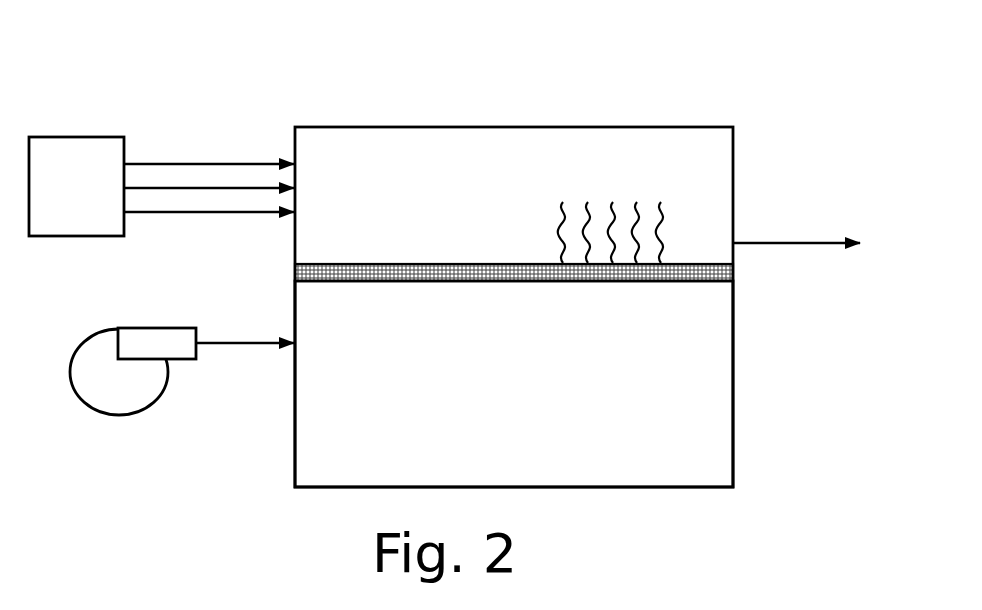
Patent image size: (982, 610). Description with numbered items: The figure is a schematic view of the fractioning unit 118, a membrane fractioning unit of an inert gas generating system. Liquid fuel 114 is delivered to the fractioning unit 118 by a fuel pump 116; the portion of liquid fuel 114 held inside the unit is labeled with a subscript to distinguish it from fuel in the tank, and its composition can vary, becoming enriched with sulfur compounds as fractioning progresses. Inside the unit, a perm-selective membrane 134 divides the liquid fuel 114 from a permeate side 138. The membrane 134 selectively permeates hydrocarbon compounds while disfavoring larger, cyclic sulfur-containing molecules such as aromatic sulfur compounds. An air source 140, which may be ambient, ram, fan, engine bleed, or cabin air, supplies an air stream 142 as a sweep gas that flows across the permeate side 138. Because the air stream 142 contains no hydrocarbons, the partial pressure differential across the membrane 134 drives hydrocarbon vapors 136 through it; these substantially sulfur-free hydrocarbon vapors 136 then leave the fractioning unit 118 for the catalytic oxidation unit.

The liquid fuel 114 is at (507, 400).
The fuel pump 116 is at (82, 333).
The fractioning unit 118 is at (678, 124).
The membrane 134 is at (450, 259).
The hydrocarbon vapors 136 is at (572, 194).
The permeate side 138 is at (355, 235).
The air source 140 is at (97, 200).
The air stream 142 is at (188, 157).